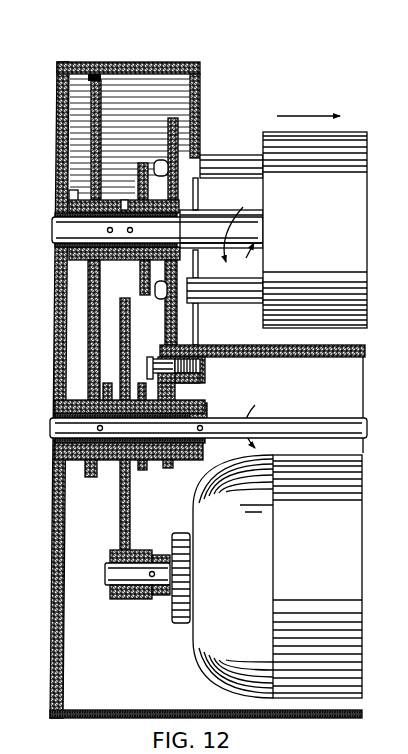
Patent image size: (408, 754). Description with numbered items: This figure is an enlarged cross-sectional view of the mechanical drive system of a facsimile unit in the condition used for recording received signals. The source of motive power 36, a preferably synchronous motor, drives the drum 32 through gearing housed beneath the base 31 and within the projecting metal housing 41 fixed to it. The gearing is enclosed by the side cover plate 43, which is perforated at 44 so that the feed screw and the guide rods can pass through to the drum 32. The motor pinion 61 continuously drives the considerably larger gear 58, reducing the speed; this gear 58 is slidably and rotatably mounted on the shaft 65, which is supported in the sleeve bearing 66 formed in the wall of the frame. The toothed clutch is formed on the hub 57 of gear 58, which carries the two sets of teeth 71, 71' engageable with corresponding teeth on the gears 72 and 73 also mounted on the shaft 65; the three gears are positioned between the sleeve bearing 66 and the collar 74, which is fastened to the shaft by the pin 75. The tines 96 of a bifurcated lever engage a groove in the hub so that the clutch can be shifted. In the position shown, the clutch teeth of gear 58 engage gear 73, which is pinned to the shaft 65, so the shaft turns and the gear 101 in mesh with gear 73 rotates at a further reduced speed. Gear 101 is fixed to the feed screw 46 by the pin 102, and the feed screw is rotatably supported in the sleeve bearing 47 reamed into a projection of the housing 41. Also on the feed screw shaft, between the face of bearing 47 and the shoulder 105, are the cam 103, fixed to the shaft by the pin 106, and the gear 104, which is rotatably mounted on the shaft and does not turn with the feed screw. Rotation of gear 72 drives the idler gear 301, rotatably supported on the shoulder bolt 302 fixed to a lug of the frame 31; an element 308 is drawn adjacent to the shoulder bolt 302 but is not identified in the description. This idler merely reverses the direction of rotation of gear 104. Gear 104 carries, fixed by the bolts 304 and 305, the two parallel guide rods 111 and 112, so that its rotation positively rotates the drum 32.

The base 31 is at (362, 346).
The drum 32 is at (354, 132).
The source of motive power 36 is at (192, 651).
The projecting metal housing 41 is at (56, 62).
The side cover plate 43 is at (200, 88).
The perforation 44 is at (172, 218).
The feed screw 46 is at (239, 239).
The sleeve bearing 47 is at (72, 196).
The hub 57 is at (110, 462).
The gear 58 is at (126, 300).
The pinion 61 is at (127, 592).
The shaft 65 is at (326, 418).
The sleeve bearing 66 is at (56, 441).
The clutch teeth 71 is at (130, 396).
The clutch teeth 71' is at (169, 472).
The gear 72 is at (178, 396).
The gear 73 is at (100, 478).
The collar 74 is at (215, 409).
The pin 75 is at (142, 450).
The tines 96 is at (143, 386).
The gear 101 is at (96, 80).
The pin 102 is at (140, 265).
The cam 103 is at (143, 168).
The gear 104 is at (176, 120).
The shoulder 105 is at (188, 214).
The pin 106 is at (126, 212).
The guide rod 111 is at (222, 157).
The guide rod 112 is at (212, 303).
The idler gear 301 is at (160, 357).
The shoulder bolt 302 is at (201, 366).
The bolt 304 is at (160, 162).
The bolt 305 is at (160, 296).
The nut 308 is at (201, 379).